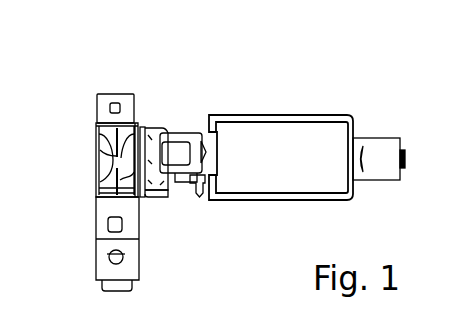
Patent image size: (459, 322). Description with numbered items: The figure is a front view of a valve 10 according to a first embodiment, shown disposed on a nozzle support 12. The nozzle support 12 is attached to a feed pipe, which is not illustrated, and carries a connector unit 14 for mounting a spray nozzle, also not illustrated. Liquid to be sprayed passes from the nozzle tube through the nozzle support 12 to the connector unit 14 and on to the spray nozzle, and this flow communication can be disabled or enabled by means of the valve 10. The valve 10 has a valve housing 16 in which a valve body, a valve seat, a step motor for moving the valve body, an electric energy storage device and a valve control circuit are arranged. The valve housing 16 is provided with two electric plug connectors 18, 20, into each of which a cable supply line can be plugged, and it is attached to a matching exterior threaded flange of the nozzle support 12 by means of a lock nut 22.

The valve 10 is at (244, 76).
The nozzle support 12 is at (102, 228).
The connector unit 14 is at (103, 97).
The valve housing 16 is at (290, 135).
The electric plug connector 18 is at (378, 148).
The electric plug connector 20 is at (178, 137).
The lock nut 22 is at (149, 125).